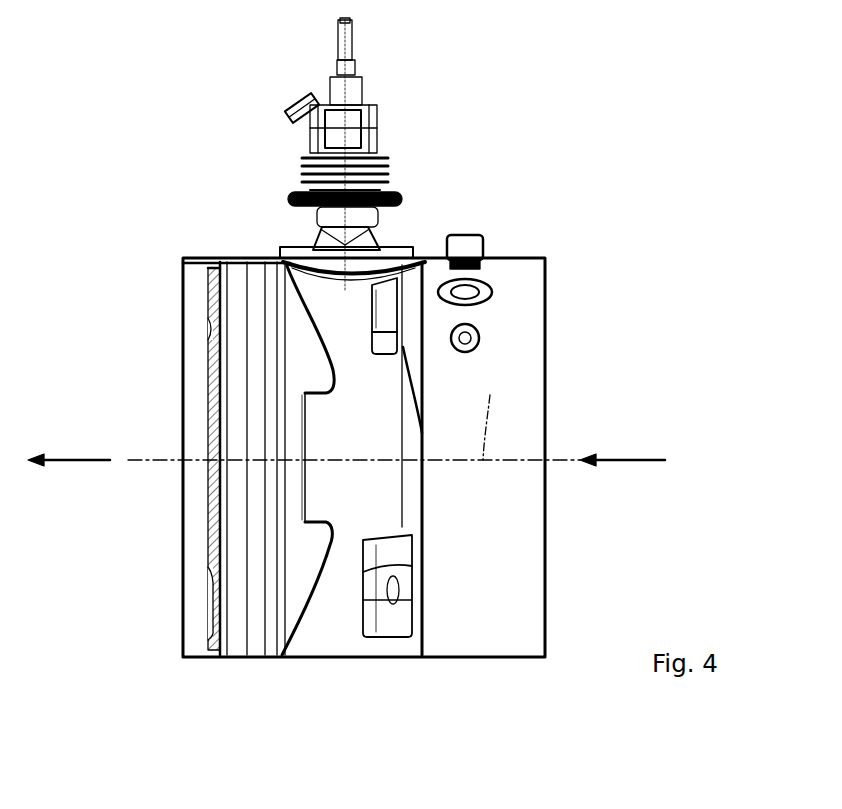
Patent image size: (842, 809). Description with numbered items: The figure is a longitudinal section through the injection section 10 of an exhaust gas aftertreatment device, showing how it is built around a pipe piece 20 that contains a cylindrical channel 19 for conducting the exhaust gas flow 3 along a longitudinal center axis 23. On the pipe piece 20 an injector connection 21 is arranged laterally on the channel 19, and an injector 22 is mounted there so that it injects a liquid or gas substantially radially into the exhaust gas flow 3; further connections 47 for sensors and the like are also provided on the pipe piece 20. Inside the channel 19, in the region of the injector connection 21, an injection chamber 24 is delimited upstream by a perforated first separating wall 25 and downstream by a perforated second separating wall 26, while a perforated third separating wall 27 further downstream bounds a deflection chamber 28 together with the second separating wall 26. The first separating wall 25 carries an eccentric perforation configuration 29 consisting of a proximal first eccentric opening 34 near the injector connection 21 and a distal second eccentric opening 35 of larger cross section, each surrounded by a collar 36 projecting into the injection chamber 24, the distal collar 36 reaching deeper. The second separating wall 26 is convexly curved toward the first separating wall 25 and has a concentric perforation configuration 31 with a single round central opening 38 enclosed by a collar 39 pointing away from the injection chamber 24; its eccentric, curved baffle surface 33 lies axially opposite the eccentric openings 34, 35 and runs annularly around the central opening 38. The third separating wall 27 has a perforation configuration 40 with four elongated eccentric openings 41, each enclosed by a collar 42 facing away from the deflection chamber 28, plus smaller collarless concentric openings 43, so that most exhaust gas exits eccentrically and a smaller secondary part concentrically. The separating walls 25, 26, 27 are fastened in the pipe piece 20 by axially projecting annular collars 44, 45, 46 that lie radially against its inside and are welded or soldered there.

The exhaust gas flow 3 is at (73, 455).
The injection section 10 is at (647, 176).
The channel 19 is at (517, 563).
The pipe piece 20 is at (398, 421).
The injector connection 21 is at (380, 240).
The injector 22 is at (360, 154).
The longitudinal center axis 23 is at (489, 414).
The injection chamber 24 is at (356, 332).
The first separating wall 25 is at (315, 494).
The second separating wall 26 is at (308, 646).
The third separating wall 27 is at (210, 537).
The deflection chamber 28 is at (257, 275).
The perforation configuration 29 is at (451, 457).
The perforation configuration 31 is at (220, 394).
The baffle surface 33 is at (325, 624).
The first eccentric opening 34 is at (370, 318).
The second eccentric opening 35 is at (375, 610).
The collar 36 is at (447, 457).
The central opening 38 is at (220, 394).
The collar 39 is at (312, 392).
The perforation configuration 40 is at (148, 459).
The eccentric openings 41 is at (148, 459).
The collar 42 is at (213, 273).
The concentric openings 43 is at (208, 465).
The collar 44 is at (412, 660).
The collar 45 is at (275, 660).
The collar 46 is at (238, 660).
The connections 47 is at (463, 247).